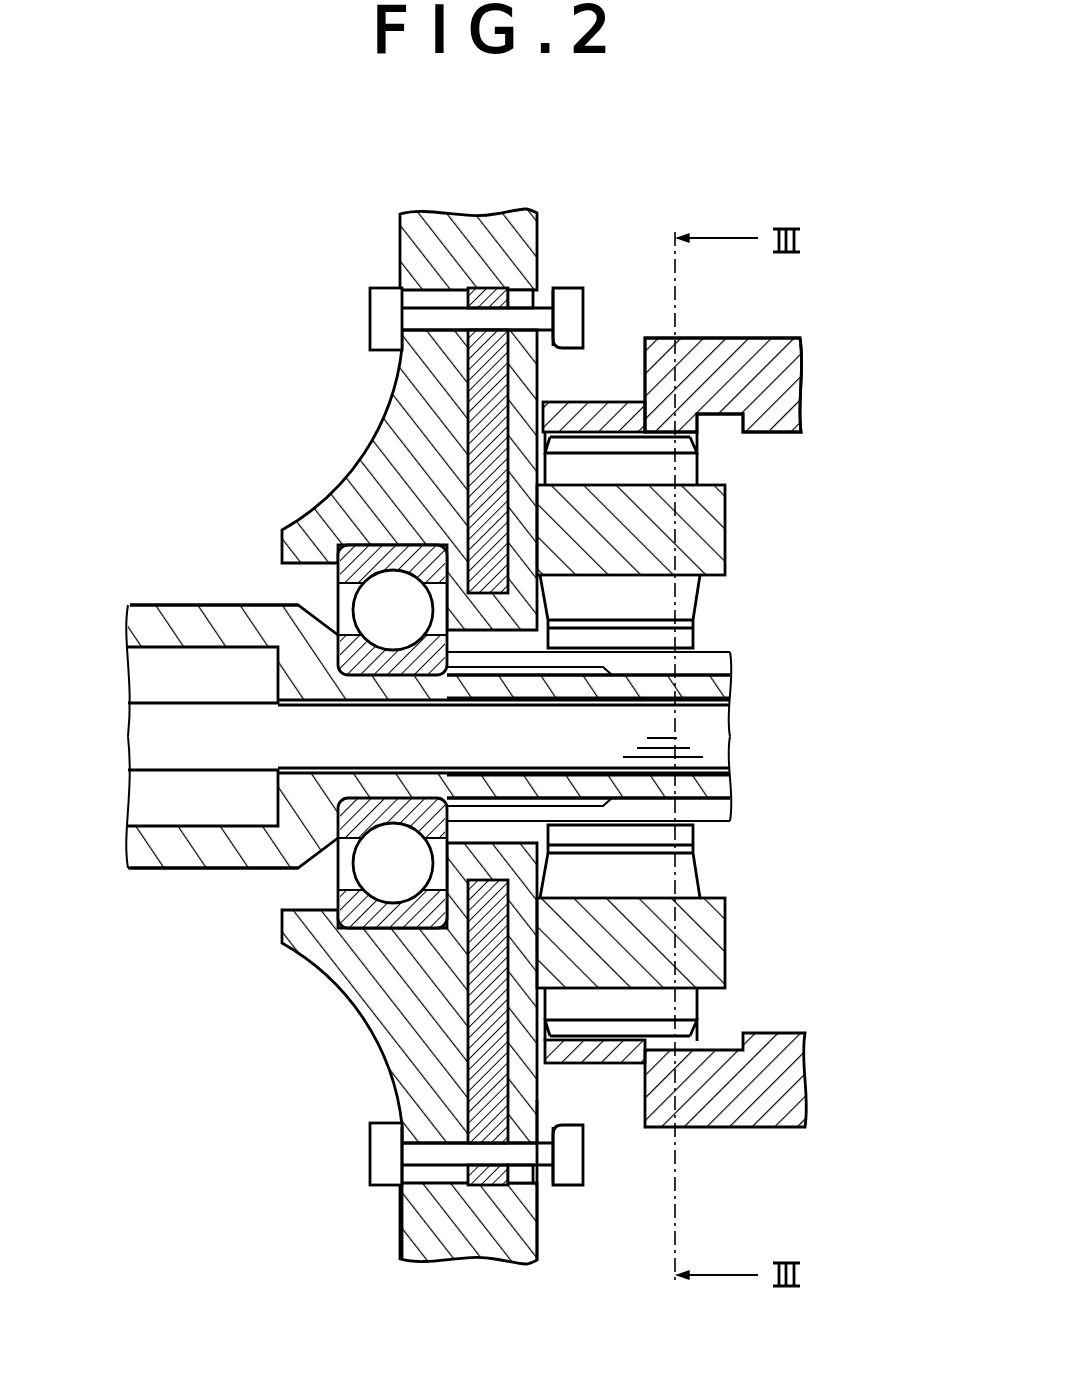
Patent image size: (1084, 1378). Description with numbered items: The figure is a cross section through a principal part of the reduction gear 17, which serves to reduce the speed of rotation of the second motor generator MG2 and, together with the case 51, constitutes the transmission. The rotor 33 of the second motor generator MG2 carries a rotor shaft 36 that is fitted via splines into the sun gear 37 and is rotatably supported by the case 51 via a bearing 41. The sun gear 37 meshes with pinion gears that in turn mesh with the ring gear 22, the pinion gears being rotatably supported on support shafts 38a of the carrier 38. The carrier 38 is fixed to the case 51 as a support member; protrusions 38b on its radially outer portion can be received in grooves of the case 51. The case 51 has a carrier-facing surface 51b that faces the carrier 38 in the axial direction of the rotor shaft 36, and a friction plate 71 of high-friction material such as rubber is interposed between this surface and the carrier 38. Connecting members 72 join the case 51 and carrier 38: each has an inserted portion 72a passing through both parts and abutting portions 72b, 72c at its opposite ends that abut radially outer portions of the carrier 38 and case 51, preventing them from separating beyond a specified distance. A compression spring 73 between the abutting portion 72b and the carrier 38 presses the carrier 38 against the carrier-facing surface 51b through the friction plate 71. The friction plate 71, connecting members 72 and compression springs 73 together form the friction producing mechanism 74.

The reduction gear 17 is at (830, 437).
The ring gear 22 is at (798, 352).
The rotor 33 is at (187, 603).
The rotor shaft 36 is at (728, 688).
The sun gear 37 is at (693, 637).
The carrier 38 is at (575, 375).
The support shaft 38a is at (725, 530).
The protrusion 38b is at (528, 288).
The bearing 41 is at (283, 585).
The case 51 is at (372, 413).
The carrier-facing surface 51b is at (530, 1122).
The friction plate 71 is at (483, 1016).
The connecting member 72 is at (470, 707).
The inserted portion 72a is at (448, 313).
The abutting portion 72b is at (578, 312).
The abutting portion 72c is at (380, 313).
The compression spring 73 is at (555, 302).
The friction producing mechanism 74 is at (445, 1075).
The second motor generator MG2 is at (153, 590).